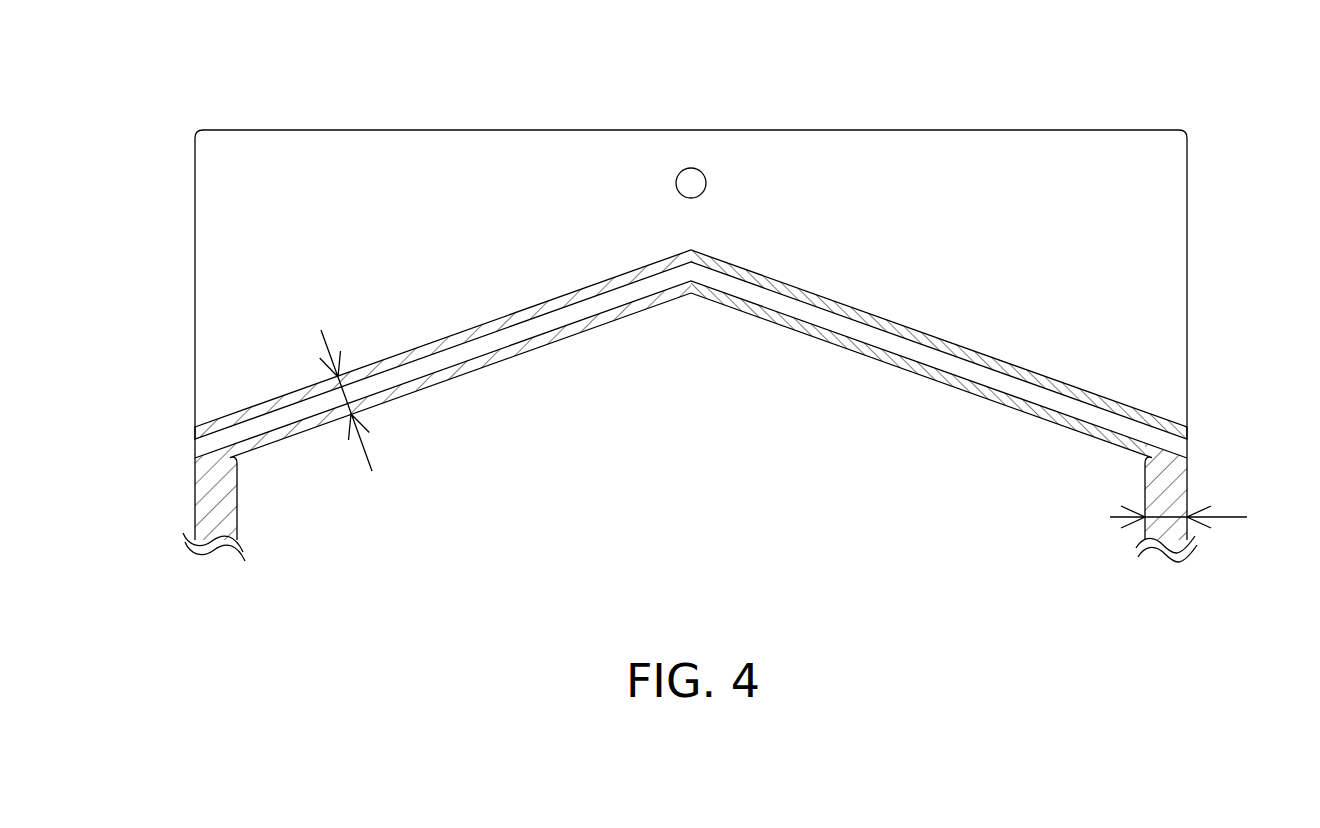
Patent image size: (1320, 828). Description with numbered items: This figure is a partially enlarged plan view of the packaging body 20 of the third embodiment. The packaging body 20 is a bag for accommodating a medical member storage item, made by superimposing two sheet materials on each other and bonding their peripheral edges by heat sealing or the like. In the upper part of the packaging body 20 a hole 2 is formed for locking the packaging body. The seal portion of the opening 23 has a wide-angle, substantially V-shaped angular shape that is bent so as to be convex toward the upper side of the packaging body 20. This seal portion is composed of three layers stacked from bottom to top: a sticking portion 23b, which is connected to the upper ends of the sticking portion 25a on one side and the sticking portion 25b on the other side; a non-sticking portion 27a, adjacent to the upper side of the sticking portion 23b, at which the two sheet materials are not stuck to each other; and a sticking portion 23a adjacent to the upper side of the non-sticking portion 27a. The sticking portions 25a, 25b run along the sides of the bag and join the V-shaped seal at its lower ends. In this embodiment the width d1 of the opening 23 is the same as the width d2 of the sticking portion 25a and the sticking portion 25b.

The hole 2 is at (692, 180).
The packaging body 20 is at (1210, 157).
The opening 23 is at (456, 309).
The sticking portion 23a is at (1022, 375).
The sticking portion 23b is at (793, 328).
The non-sticking portion 27a is at (912, 355).
The sticking portion 25a is at (208, 497).
The sticking portion 25b is at (1178, 478).
The width of the opening d1 is at (336, 385).
The width of the sticking portion d2 is at (1198, 517).